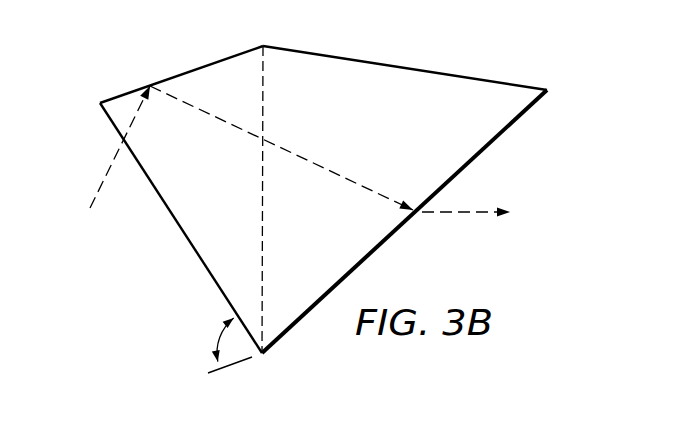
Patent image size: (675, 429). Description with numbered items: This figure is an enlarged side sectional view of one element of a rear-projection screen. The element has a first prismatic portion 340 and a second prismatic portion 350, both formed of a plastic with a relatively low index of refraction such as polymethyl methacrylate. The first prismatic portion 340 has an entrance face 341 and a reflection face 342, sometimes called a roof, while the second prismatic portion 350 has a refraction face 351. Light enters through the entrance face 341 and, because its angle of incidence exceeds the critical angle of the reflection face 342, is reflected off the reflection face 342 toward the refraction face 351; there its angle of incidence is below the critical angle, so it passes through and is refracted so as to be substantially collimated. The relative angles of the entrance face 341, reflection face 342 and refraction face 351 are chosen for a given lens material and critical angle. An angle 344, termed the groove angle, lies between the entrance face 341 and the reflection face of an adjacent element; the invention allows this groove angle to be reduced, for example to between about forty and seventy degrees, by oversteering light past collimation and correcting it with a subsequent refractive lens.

The first prismatic portion 340 is at (227, 185).
The second prismatic portion 350 is at (396, 138).
The reflection face 342 is at (202, 67).
The entrance face 341 is at (178, 232).
The refraction face 351 is at (497, 142).
The angle 344 is at (228, 333).